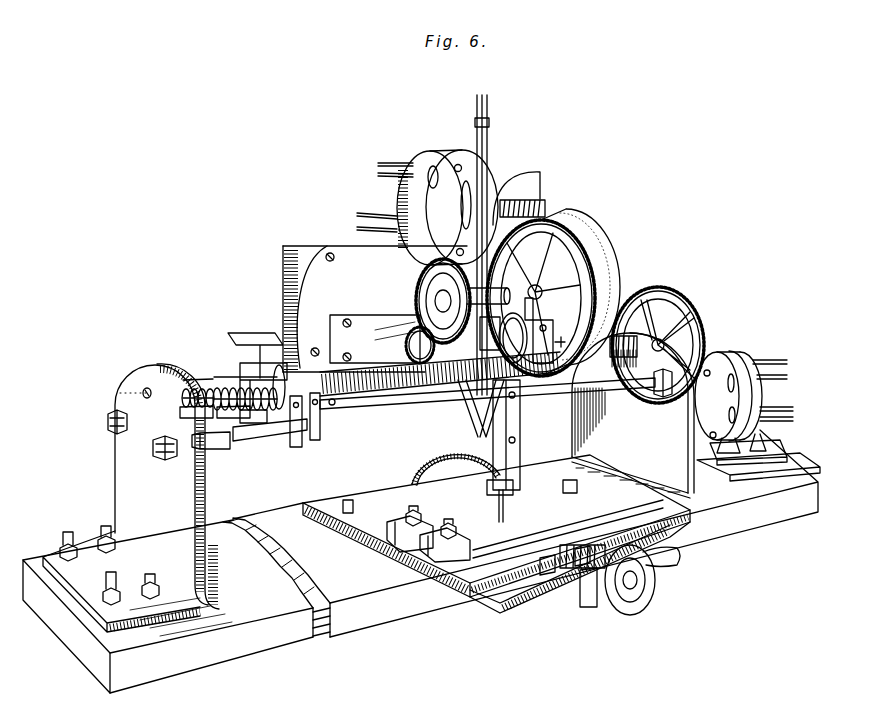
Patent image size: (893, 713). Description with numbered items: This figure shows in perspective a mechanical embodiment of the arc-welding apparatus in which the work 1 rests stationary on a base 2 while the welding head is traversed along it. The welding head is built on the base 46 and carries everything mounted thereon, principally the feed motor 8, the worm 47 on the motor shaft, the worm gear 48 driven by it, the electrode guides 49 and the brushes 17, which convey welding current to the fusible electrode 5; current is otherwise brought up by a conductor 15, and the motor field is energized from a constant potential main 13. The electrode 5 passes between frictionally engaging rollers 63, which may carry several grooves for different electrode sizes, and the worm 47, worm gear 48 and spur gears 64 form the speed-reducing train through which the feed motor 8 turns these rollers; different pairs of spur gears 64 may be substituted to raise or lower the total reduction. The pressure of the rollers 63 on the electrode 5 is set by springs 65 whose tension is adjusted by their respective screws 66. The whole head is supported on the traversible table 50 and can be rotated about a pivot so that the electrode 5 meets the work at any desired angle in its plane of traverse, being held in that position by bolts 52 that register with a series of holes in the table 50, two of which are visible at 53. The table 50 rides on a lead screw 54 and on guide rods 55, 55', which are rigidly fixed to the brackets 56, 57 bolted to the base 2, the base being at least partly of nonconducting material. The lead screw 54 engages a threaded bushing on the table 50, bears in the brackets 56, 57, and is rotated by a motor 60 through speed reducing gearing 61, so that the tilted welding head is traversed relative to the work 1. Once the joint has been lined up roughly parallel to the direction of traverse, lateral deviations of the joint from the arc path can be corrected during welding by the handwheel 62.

The work 1 is at (496, 526).
The base 2 is at (137, 677).
The fusible electrode 5 is at (488, 100).
The feed motor 8 is at (400, 200).
The constant potential main 13 is at (378, 175).
The conductor 15 is at (440, 465).
The brush 17 is at (510, 425).
The base of welding head 46 is at (375, 309).
The worm 47 is at (533, 200).
The worm gear 48 is at (578, 235).
The electrode guide 49 is at (490, 122).
The traversible table 50 is at (287, 265).
The bolt 52 is at (330, 253).
The hole 53 is at (337, 402).
The lead screw 54 is at (195, 373).
The guide rod 55 is at (276, 430).
The guide rod 55' is at (215, 437).
The bracket 56 is at (122, 496).
The bracket 57 is at (575, 443).
The motor 60 is at (745, 360).
The speed reducing gearing 61 is at (700, 325).
The handwheel 62 is at (642, 596).
The rollers 63 is at (535, 305).
The spur gears 64 is at (420, 294).
The spring 65 is at (455, 352).
The screw 66 is at (540, 395).